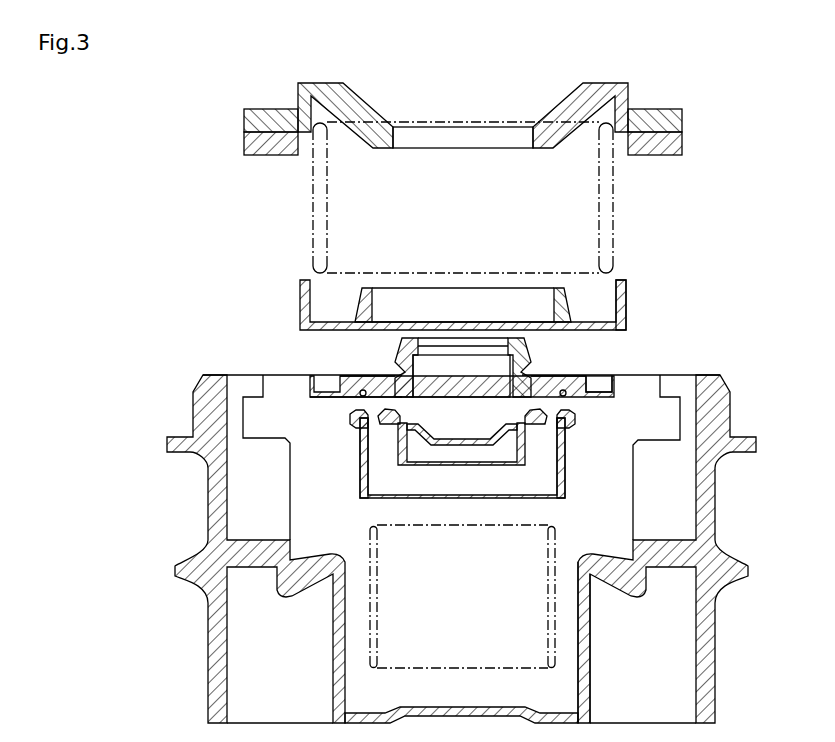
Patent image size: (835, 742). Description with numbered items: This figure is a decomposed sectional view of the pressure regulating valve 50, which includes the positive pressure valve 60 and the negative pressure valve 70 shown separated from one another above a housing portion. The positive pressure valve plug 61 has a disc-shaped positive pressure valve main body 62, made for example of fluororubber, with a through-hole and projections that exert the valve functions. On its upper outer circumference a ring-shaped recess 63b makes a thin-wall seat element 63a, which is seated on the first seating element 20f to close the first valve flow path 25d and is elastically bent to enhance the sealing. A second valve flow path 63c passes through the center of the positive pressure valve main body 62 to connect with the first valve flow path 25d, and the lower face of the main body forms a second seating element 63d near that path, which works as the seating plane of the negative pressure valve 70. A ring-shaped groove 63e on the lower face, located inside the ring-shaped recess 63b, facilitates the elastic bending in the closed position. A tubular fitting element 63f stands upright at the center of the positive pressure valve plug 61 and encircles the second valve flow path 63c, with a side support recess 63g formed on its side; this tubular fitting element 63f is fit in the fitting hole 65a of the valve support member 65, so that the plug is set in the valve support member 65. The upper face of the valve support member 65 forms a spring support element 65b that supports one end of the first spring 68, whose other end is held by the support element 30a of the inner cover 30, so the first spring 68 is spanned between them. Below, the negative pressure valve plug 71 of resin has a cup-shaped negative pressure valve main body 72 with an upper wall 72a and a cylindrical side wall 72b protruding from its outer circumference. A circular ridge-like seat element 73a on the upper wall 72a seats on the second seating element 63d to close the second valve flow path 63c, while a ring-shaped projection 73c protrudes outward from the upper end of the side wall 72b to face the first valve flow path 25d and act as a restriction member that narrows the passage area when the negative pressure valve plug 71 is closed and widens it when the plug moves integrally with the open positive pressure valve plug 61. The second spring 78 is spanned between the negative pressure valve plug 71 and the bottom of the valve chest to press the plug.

The inner cover 30 is at (596, 102).
The support element 30a is at (597, 102).
The first spring 68 is at (620, 200).
The pressure regulating valve 50 is at (82, 290).
The positive pressure valve 60 is at (192, 321).
The negative pressure valve 70 is at (158, 385).
The valve support member 65 is at (592, 320).
The fitting hole 65a is at (521, 322).
The spring support element 65b is at (627, 297).
The positive pressure valve main body 62 is at (593, 378).
The positive pressure valve plug 61 is at (463, 314).
The seat element 63a is at (600, 420).
The ring-shaped recess 63b is at (598, 384).
The second valve flow path 63c is at (415, 378).
The second seating element 63d is at (402, 398).
The ring-shaped groove 63e is at (565, 398).
The tubular fitting element 63f is at (507, 350).
The side support recess 63g is at (526, 376).
The negative pressure valve plug 71 is at (360, 488).
The negative pressure valve main body 72 is at (108, 443).
The upper wall 72a is at (357, 410).
The cylindrical side wall 72b is at (360, 444).
The seat element 73a is at (565, 470).
The ring-shaped projection 73c is at (566, 424).
The first seating element 20f is at (590, 580).
The first valve flow path 25d is at (567, 632).
The second spring 78 is at (555, 658).